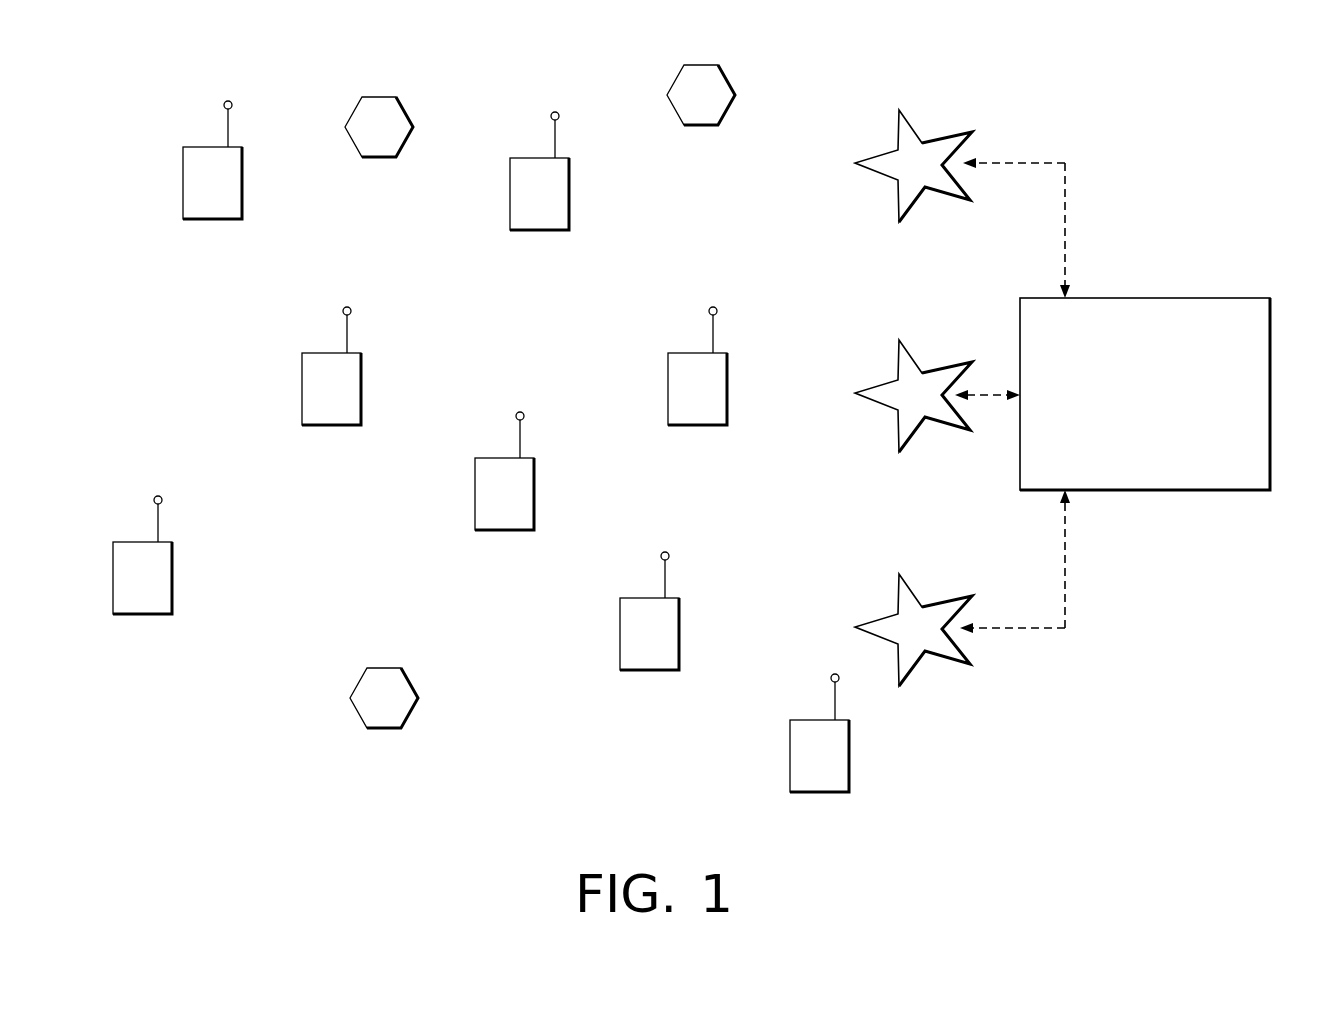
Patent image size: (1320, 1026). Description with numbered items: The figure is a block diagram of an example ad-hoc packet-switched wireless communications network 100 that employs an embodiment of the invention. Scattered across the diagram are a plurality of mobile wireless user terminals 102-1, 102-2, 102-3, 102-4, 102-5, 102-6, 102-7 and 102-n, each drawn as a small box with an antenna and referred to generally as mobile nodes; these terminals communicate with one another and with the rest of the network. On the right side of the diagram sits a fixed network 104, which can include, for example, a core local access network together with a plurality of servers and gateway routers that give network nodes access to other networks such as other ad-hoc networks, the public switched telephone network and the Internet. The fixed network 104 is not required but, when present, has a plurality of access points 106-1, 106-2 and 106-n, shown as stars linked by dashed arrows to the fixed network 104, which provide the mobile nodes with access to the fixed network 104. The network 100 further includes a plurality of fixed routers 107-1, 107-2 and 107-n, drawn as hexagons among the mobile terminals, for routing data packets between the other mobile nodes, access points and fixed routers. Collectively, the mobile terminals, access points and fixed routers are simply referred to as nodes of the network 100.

The ad-hoc packet-switched wireless communications network 100 is at (1112, 97).
The mobile wireless user terminal 102-1 is at (212, 218).
The mobile wireless user terminal 102-2 is at (537, 230).
The mobile wireless user terminal 102-3 is at (330, 423).
The mobile wireless user terminal 102-4 is at (137, 613).
The mobile wireless user terminal 102-5 is at (495, 528).
The mobile wireless user terminal 102-6 is at (690, 423).
The mobile wireless user terminal 102-7 is at (638, 670).
The mobile wireless user terminal 102-n is at (810, 792).
The fixed network 104 is at (1188, 490).
The access point 106-1 is at (927, 197).
The access point 106-2 is at (927, 425).
The access point 106-n is at (925, 662).
The fixed router 107-1 is at (375, 157).
The fixed router 107-2 is at (702, 126).
The fixed router 107-n is at (380, 728).